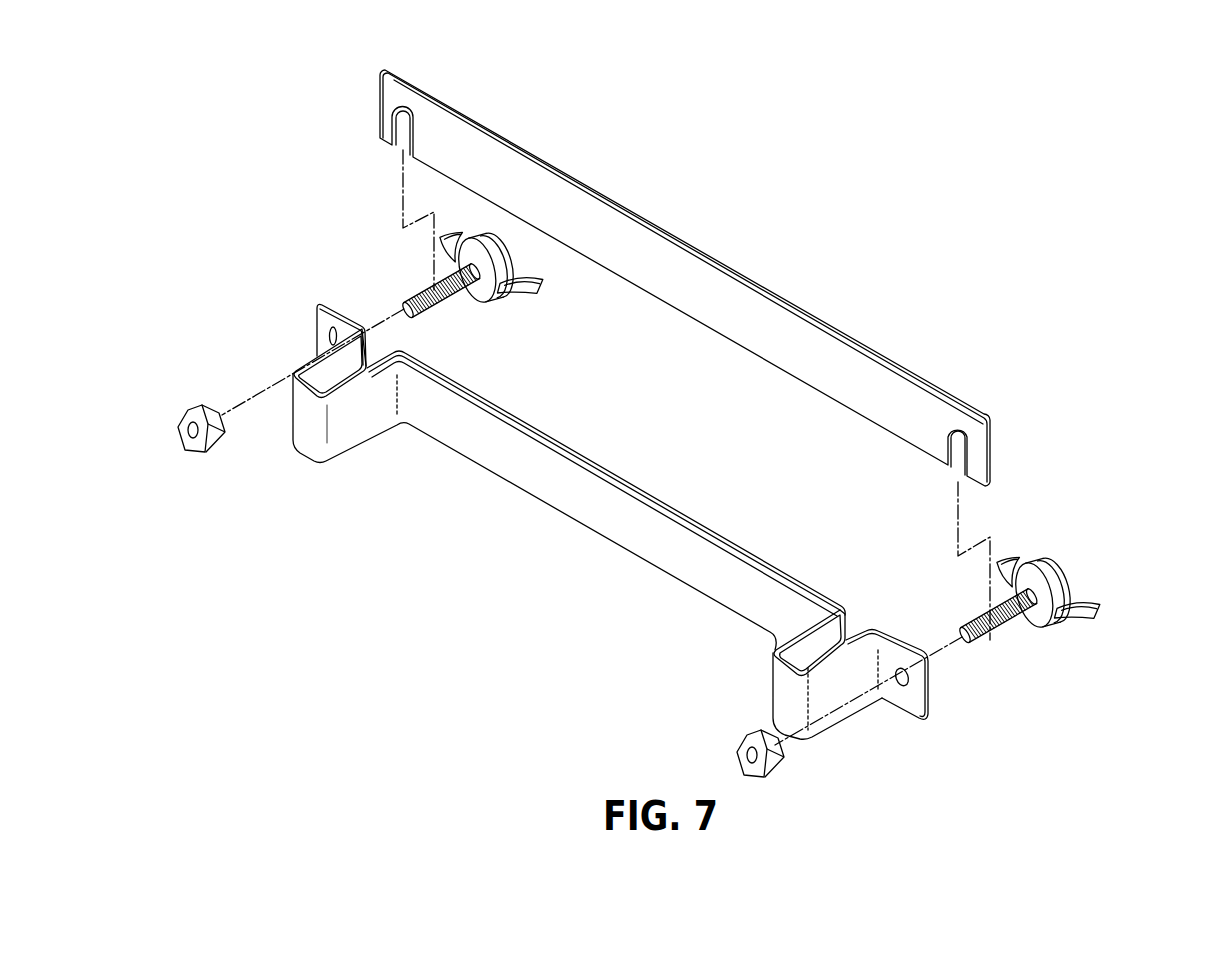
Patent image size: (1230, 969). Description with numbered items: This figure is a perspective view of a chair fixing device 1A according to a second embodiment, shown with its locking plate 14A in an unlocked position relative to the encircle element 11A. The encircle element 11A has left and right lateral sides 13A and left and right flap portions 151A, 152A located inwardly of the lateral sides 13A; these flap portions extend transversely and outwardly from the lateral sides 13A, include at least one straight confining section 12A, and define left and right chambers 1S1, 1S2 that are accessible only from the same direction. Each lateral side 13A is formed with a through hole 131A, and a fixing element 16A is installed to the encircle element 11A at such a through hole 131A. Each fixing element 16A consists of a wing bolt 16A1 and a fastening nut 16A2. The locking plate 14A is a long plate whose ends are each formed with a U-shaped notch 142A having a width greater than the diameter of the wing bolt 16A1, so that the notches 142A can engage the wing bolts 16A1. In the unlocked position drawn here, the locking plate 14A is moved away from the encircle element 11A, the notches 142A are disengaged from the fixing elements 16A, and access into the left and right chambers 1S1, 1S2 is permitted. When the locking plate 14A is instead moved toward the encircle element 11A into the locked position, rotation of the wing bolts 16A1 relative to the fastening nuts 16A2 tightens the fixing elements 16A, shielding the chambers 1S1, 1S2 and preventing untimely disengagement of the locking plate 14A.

The chair fixing device 1A is at (880, 288).
The encircle element 11A is at (597, 518).
The straight confining section 12A is at (626, 531).
The lateral side 13A is at (638, 515).
The through hole 131A is at (331, 336).
The locking plate 14A is at (862, 330).
The U-shaped notch 142A is at (393, 118).
The left flap portion 151A is at (327, 405).
The right flap portion 152A is at (821, 628).
The left chamber 1S1 is at (307, 358).
The right chamber 1S2 is at (812, 625).
The fixing element 16A is at (683, 489).
The wing bolt 16A1 is at (443, 302).
The fastening nut 16A2 is at (206, 452).